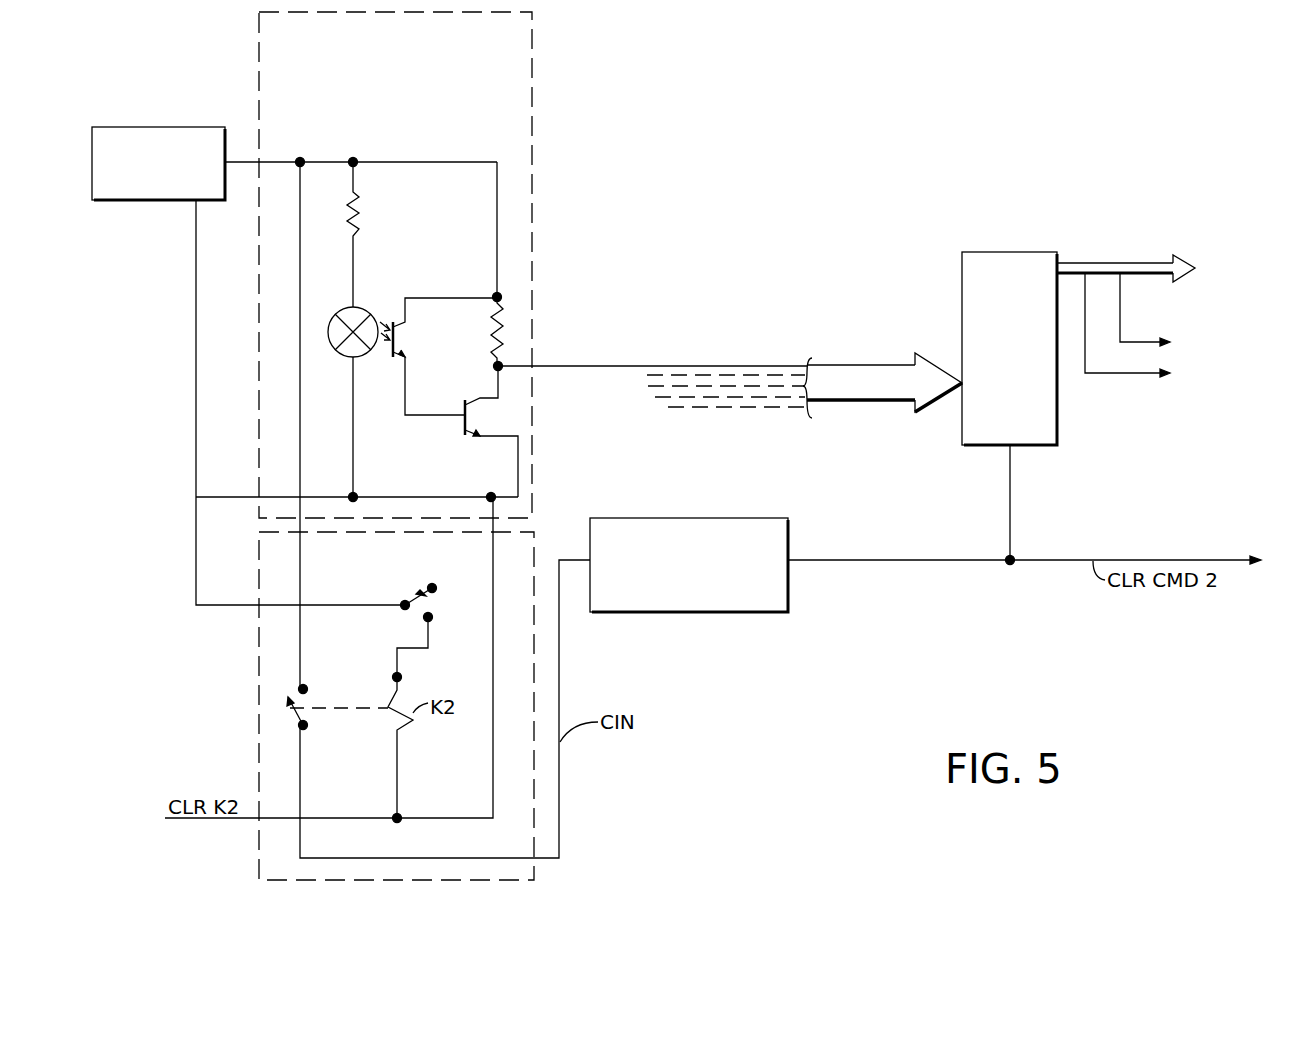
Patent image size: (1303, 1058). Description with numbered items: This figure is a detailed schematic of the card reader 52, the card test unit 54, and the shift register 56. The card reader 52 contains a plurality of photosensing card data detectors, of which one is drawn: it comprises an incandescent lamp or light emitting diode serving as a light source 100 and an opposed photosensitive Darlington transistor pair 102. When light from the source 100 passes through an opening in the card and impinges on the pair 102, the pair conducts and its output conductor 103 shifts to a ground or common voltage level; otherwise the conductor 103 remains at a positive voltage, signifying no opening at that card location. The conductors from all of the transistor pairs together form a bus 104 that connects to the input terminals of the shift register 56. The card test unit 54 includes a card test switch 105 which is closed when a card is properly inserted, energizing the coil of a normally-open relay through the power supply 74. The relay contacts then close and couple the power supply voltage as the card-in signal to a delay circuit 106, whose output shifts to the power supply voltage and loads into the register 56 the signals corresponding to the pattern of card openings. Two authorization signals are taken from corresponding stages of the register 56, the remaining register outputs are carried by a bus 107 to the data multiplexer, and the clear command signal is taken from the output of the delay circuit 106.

The card reader 52 is at (516, 58).
The card test unit 54 is at (270, 863).
The power supply 74 is at (165, 127).
The light source 100 is at (368, 311).
The photosensitive Darlington transistor pair 102 is at (467, 400).
The output conductor 103 is at (585, 366).
The bus 104 is at (843, 373).
The card test switch 105 is at (413, 597).
The delay circuit 106 is at (680, 598).
The bus 107 is at (1095, 268).
The shift register 56 is at (972, 258).